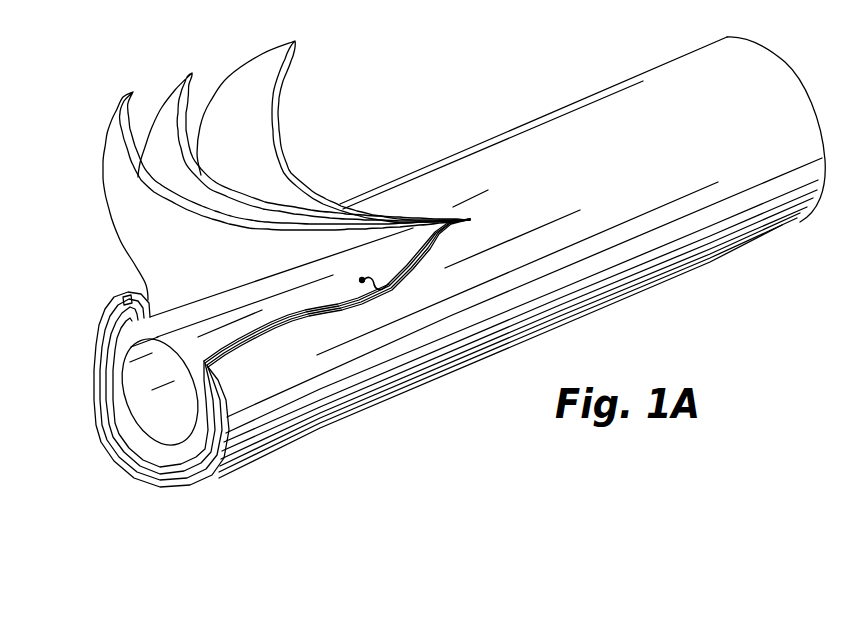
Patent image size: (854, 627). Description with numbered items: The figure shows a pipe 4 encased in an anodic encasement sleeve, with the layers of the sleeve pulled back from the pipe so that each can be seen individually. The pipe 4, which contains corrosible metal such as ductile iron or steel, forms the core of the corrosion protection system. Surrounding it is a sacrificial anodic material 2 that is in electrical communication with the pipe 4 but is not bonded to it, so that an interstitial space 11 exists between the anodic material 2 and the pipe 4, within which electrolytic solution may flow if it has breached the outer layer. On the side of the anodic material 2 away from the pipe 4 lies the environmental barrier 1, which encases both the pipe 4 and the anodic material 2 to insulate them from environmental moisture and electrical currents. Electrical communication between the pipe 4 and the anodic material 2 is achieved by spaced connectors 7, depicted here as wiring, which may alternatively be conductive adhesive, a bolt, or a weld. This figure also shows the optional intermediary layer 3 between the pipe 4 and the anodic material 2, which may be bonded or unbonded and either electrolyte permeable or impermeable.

The environmental barrier 1 is at (263, 85).
The anodic material 2 is at (173, 97).
The intermediary layer 3 is at (114, 138).
The pipe 4 is at (180, 446).
The connectors 7 is at (360, 279).
The interstitial space 11 is at (133, 432).